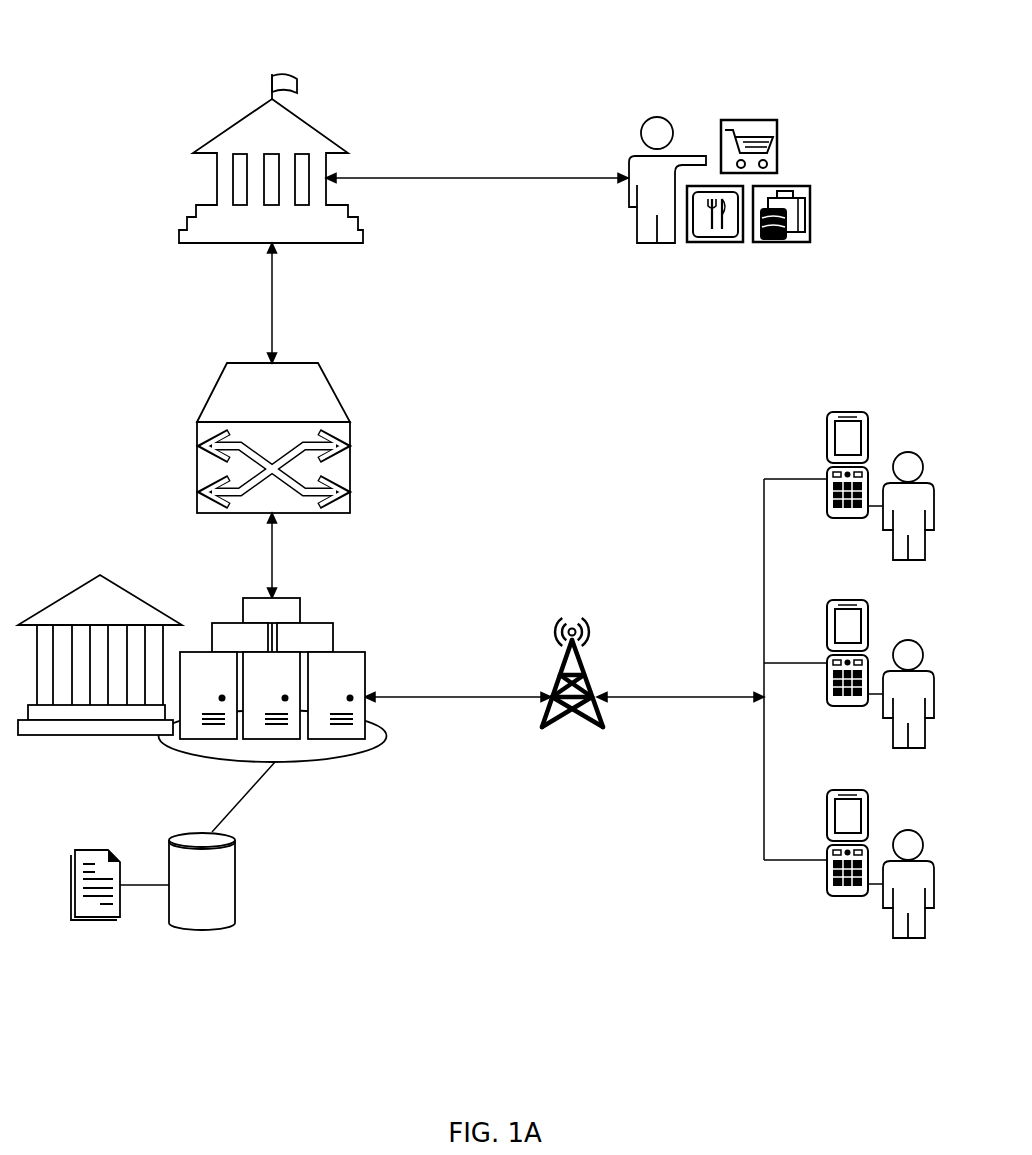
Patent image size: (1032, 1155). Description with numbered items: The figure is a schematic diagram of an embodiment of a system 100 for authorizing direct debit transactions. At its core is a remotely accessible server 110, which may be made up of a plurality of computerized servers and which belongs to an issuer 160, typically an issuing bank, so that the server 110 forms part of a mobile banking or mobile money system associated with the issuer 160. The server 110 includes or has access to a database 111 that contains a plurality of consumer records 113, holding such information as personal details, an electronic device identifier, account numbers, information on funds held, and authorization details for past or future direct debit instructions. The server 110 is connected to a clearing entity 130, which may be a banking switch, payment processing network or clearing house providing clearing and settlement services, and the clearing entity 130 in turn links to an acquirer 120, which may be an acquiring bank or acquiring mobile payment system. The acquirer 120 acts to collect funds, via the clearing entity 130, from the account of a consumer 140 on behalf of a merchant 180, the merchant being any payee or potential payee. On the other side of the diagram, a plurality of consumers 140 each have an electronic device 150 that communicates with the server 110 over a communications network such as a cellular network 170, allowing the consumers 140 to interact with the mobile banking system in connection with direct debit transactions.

The system 100 is at (107, 82).
The remotely accessible server 110 is at (293, 686).
The database 111 is at (181, 895).
The consumer records 113 is at (73, 918).
The acquirer 120 is at (248, 236).
The clearing entity 130 is at (253, 406).
The consumer 140 is at (929, 590).
The electronic device 150 is at (868, 550).
The issuer 160 is at (121, 612).
The cellular network 170 is at (545, 727).
The merchant 180 is at (643, 123).